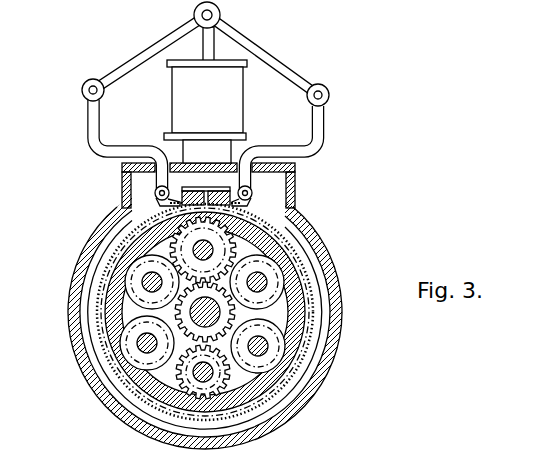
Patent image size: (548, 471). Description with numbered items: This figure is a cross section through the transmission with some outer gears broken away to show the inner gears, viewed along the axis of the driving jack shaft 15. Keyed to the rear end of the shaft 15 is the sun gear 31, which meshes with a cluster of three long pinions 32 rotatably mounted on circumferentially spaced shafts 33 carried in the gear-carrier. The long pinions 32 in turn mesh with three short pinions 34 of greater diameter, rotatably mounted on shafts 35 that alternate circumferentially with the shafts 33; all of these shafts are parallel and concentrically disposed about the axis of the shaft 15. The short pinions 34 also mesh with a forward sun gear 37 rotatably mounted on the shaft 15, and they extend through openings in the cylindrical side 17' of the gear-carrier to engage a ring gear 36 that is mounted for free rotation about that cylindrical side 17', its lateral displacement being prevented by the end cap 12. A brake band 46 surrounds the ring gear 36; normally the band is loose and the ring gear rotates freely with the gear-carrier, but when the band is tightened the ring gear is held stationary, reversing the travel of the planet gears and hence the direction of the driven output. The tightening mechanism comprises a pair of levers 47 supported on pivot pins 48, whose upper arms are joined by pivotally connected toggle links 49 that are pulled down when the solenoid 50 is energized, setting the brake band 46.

The cylindrical cap 12 is at (72, 327).
The driving jack shaft 15 is at (215, 306).
The cylindrical side of gear-carrier 17' is at (187, 306).
The sun gear 31 is at (268, 273).
The long pinions 32 is at (148, 262).
The shafts 33 is at (118, 283).
The short pinions 34 is at (130, 342).
The shafts 35 is at (140, 368).
The ring gear 36 is at (232, 222).
The forward sun gear 37 is at (177, 350).
The brake band 46 is at (130, 228).
The levers 47 is at (142, 156).
The pivot pins 48 is at (124, 173).
The toggle links 49 is at (139, 60).
The solenoid 50 is at (227, 122).